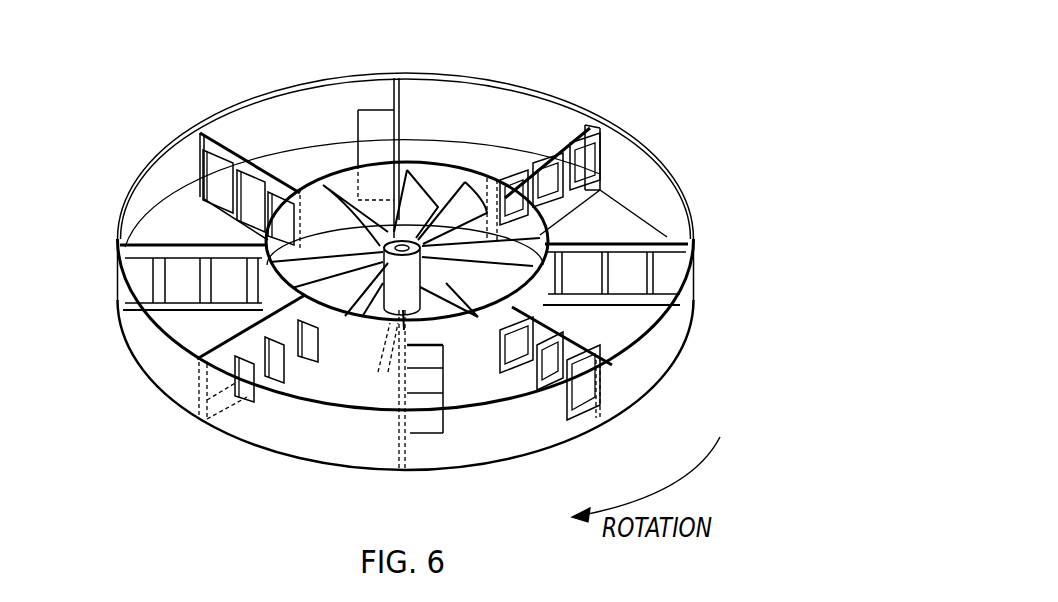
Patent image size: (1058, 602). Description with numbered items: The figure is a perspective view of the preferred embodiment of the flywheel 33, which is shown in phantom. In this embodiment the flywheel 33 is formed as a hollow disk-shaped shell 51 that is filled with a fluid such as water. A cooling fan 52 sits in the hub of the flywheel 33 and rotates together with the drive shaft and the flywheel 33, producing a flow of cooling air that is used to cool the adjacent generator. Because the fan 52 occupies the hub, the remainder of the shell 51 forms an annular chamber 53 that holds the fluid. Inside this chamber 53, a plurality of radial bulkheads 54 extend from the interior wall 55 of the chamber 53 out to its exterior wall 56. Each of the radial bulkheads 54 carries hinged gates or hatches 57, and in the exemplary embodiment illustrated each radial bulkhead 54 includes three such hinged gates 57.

The flywheel 33 is at (643, 82).
The hollow disk-shaped shell 51 is at (686, 194).
The cooling fan 52 is at (461, 200).
The annular chamber 53 is at (177, 330).
The radial bulkheads 54 is at (207, 157).
The interior wall 55 is at (347, 360).
The exterior wall 56 is at (307, 440).
The hinged gates 57 is at (380, 110).